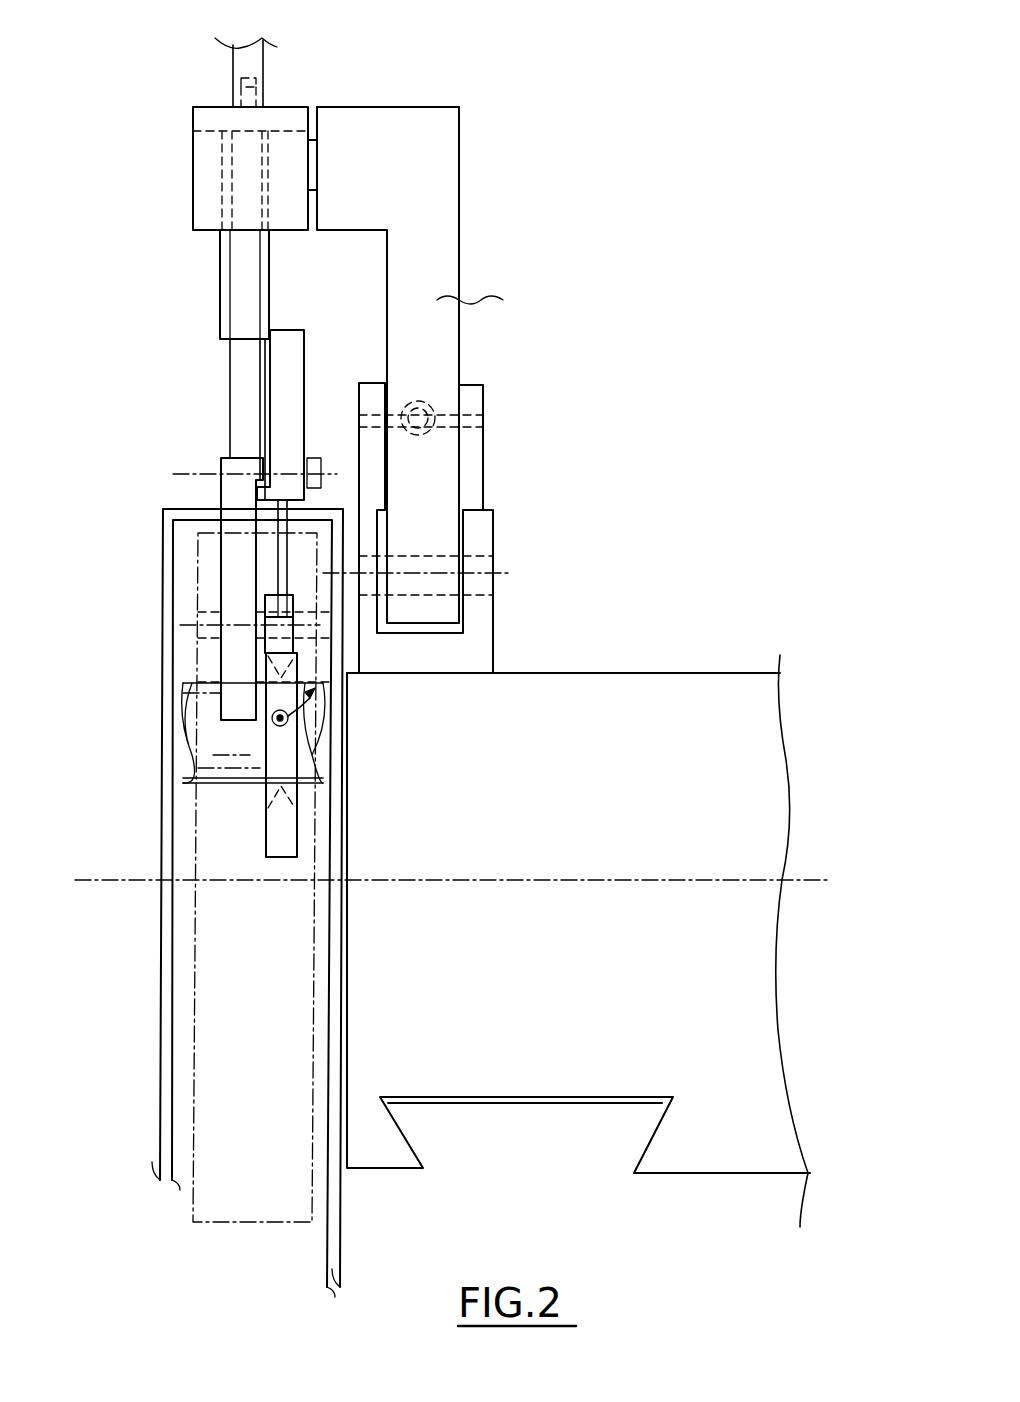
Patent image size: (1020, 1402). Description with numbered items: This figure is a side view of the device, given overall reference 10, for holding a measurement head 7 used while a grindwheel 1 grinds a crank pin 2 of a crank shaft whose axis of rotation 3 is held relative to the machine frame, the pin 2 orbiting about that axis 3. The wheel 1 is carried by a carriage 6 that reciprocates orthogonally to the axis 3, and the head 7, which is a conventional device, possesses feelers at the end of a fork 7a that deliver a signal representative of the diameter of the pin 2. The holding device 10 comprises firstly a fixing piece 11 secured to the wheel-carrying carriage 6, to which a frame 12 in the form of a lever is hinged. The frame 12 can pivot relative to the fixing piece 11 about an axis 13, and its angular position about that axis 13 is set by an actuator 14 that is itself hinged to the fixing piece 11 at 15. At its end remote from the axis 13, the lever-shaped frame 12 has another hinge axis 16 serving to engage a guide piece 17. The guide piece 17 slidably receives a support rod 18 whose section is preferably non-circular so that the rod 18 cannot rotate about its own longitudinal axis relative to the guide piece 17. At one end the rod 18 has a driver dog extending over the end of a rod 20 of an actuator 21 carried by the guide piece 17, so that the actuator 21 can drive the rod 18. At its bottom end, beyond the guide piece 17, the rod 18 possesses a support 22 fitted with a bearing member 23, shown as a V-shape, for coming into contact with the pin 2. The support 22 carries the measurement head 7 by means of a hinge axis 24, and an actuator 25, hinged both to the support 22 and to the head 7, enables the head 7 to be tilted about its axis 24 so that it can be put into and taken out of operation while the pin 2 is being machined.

The wheel 1 is at (208, 930).
The crank pin 2 is at (232, 765).
The axis of rotation 3 is at (575, 880).
The carriage 6 is at (607, 673).
The measurement head 7 is at (285, 755).
The fork 7a is at (297, 660).
The device for holding the head 10 is at (448, 365).
The fixing piece 11 is at (478, 633).
The frame 12 is at (435, 305).
The axis 13 is at (420, 552).
The actuator 14 is at (423, 412).
The hinge point 15 is at (470, 413).
The hinge axis 16 is at (313, 163).
The guide piece 17 is at (205, 192).
The support rod 18 is at (240, 395).
The rod 20 is at (258, 75).
The actuator 21 is at (220, 303).
The support 22 is at (237, 550).
The bearing member 23 is at (237, 700).
The hinge axis 24 is at (252, 612).
The actuator 25 is at (283, 388).